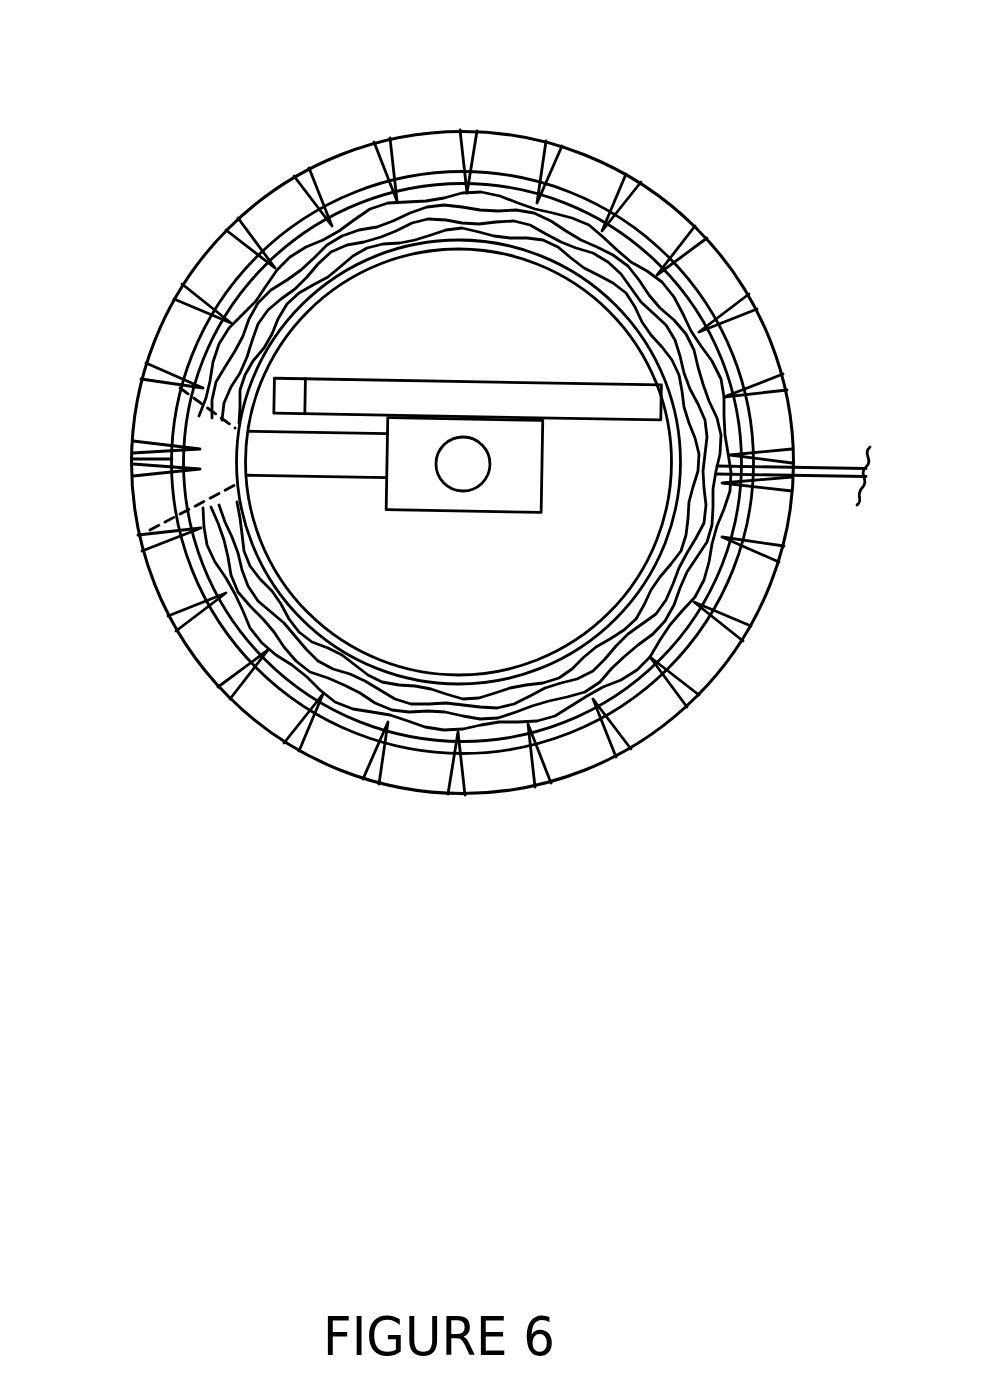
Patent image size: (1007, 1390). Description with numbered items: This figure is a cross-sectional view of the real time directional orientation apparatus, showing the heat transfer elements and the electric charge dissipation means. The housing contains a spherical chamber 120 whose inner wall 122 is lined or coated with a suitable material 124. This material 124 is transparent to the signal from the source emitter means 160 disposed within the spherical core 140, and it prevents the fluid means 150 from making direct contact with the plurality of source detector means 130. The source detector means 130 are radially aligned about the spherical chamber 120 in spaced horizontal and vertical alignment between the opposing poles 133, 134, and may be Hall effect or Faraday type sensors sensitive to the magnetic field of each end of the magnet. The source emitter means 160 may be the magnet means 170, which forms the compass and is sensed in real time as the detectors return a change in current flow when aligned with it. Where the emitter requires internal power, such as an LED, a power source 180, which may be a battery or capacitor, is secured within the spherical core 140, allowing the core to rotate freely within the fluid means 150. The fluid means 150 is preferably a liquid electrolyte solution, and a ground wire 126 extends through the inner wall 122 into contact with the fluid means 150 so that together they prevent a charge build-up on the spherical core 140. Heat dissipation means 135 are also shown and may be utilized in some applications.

The spherical chamber 120 is at (360, 223).
The inner wall 122 is at (745, 577).
The material 124 is at (710, 660).
The ground wire 126 is at (825, 462).
The source detector means 130 is at (157, 505).
The pole 133 is at (469, 131).
The pole 134 is at (457, 795).
The heat dissipation means 135 is at (683, 693).
The spherical core 140 is at (285, 307).
The fluid means 150 is at (232, 560).
The source emitter means 160 is at (325, 479).
The magnet means 170 is at (509, 381).
The power source 180 is at (455, 511).